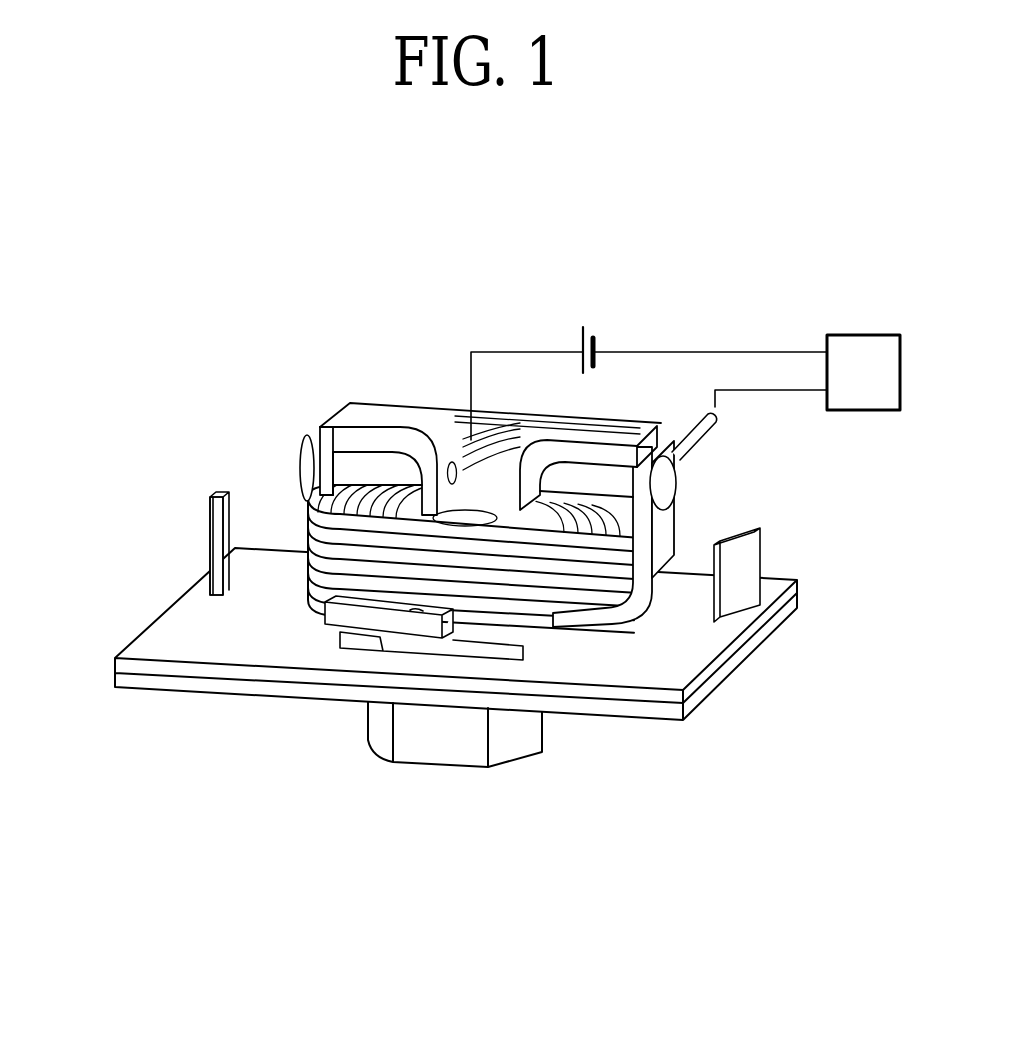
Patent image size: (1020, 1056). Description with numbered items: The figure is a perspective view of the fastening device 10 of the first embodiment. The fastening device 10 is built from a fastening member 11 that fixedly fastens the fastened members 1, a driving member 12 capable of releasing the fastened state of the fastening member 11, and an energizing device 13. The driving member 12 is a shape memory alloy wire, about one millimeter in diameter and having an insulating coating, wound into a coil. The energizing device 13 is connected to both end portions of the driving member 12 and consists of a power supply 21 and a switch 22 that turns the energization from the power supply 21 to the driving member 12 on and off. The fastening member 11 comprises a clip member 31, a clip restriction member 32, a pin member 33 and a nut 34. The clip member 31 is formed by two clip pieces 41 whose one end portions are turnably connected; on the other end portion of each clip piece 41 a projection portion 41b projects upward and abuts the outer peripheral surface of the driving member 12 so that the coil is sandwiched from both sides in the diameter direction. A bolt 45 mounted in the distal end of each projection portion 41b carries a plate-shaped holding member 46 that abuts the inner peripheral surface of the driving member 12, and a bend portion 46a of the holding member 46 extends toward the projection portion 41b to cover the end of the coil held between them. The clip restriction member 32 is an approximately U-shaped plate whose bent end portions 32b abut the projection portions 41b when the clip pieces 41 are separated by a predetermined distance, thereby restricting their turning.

The fastened members 1 is at (799, 586).
The fastening device 10 is at (165, 345).
The fastening member 11 is at (127, 812).
The driving member 12 is at (600, 618).
The energizing device 13 is at (685, 317).
The power supply 21 is at (590, 327).
The switch 22 is at (839, 332).
The clip member 31 is at (366, 651).
The clip restriction member 32 is at (205, 596).
The end portions 32b is at (211, 493).
The pin member 33 is at (484, 497).
The nut 34 is at (457, 745).
The clip pieces 41 is at (303, 618).
The projection portion 41b is at (320, 430).
The bolt 45 is at (298, 470).
The holding member 46 is at (462, 423).
The bend portion 46a is at (386, 418).